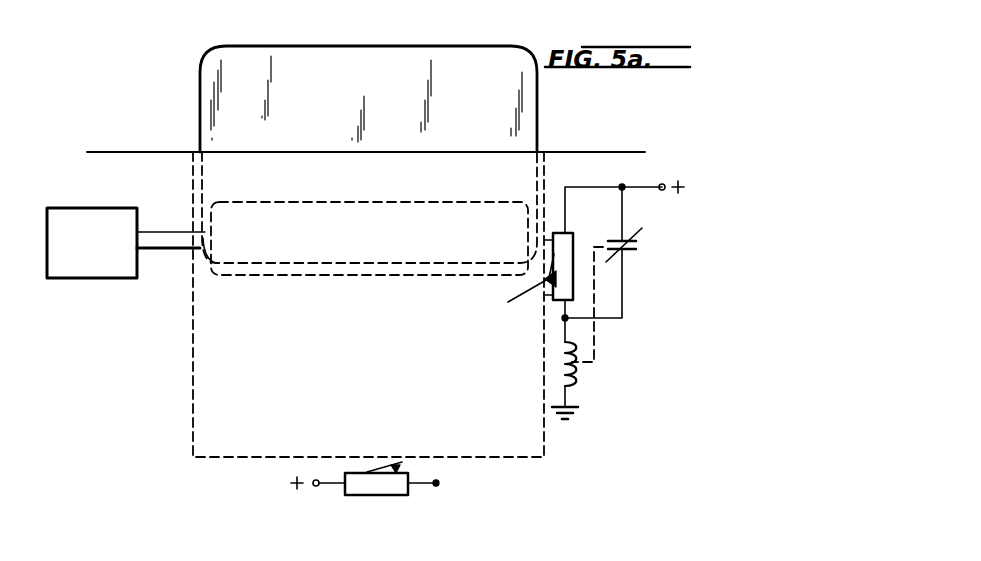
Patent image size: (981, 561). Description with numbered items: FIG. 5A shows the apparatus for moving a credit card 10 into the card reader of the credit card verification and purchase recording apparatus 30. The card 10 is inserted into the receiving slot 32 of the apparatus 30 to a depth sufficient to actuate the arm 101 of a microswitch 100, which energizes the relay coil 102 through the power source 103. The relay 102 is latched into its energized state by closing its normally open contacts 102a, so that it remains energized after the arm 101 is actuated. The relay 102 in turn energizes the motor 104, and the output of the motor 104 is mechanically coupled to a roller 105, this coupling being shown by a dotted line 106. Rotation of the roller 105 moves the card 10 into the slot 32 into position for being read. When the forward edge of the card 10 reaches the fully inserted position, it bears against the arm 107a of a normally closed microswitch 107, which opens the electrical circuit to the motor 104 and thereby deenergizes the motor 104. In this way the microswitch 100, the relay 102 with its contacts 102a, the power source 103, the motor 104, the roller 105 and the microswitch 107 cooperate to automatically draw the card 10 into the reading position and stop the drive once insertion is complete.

The credit card 10 is at (354, 32).
The credit card verification and purchase recording apparatus 30 is at (175, 123).
The receiving slot 32 is at (541, 151).
The microswitch 100 is at (576, 236).
The arm 101 is at (517, 285).
The relay coil 102 is at (572, 378).
The normally open contacts 102a is at (645, 243).
The power source 103 is at (670, 184).
The motor 104 is at (100, 194).
The roller 105 is at (306, 202).
The dotted line 106 is at (168, 213).
The normally closed microswitch 107 is at (388, 496).
The arm 107a is at (402, 462).